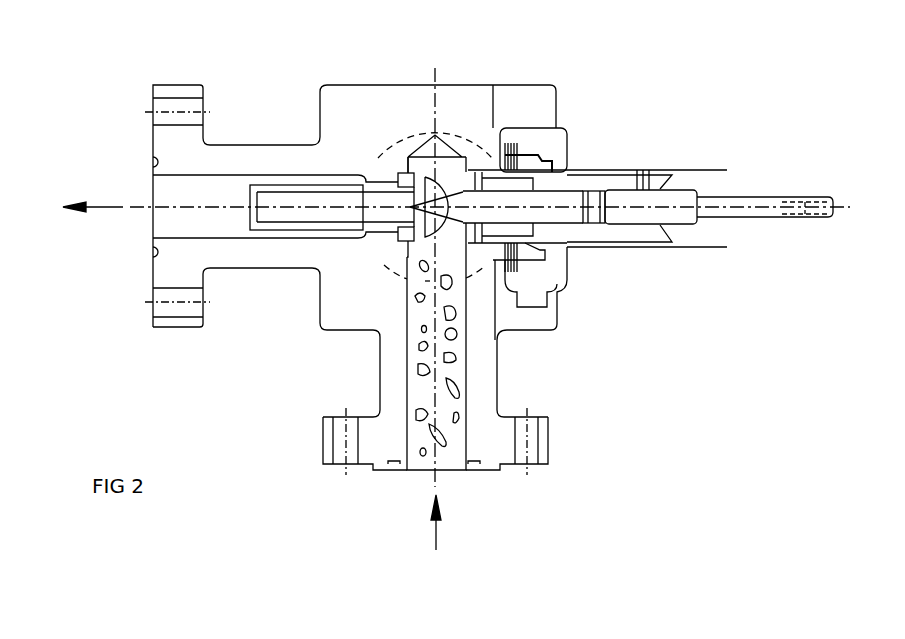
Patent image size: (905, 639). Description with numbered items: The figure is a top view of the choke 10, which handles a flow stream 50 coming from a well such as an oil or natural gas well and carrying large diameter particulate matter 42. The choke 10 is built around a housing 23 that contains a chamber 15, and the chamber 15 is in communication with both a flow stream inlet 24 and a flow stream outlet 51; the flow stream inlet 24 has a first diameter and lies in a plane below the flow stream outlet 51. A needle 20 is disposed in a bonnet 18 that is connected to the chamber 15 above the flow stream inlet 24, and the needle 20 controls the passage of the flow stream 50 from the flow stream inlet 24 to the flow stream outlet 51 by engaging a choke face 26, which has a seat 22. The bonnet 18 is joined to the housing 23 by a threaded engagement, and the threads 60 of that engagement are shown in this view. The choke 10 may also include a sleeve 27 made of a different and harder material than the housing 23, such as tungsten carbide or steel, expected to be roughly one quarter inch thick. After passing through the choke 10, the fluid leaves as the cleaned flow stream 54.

The choke 10 is at (574, 326).
The chamber 15 is at (408, 155).
The bonnet 18 is at (517, 172).
The needle 20 is at (435, 222).
The seat 22 is at (410, 226).
The housing 23 is at (413, 93).
The flow stream inlet 24 is at (466, 443).
The choke face 26 is at (406, 175).
The sleeve 27 is at (282, 189).
The large diameter particulate matter 42 is at (456, 337).
The flow stream 50 is at (438, 530).
The flow stream outlet 51 is at (179, 170).
The cleaned flow stream 54 is at (102, 205).
The threads 60 is at (502, 165).